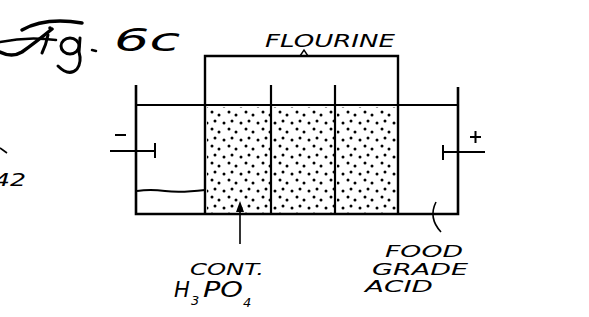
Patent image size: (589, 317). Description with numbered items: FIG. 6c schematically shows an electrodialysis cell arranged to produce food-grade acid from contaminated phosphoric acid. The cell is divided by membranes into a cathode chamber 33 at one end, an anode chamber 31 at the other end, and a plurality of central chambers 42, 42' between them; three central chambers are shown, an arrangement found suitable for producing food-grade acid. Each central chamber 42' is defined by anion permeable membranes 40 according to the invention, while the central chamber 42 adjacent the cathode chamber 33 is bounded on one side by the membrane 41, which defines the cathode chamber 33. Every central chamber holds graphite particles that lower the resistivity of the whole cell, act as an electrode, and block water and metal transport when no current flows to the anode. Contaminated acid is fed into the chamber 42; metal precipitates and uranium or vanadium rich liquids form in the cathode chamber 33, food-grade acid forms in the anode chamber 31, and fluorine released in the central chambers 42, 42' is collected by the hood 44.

The membrane defining the cathode chamber 41 is at (205, 85).
The hood 44 is at (398, 56).
The anion permeable membrane 40 is at (398, 94).
The central chamber 42 is at (200, 182).
The central chamber 42' is at (335, 193).
The cathode chamber 33 is at (152, 180).
The anode chamber 31 is at (447, 177).